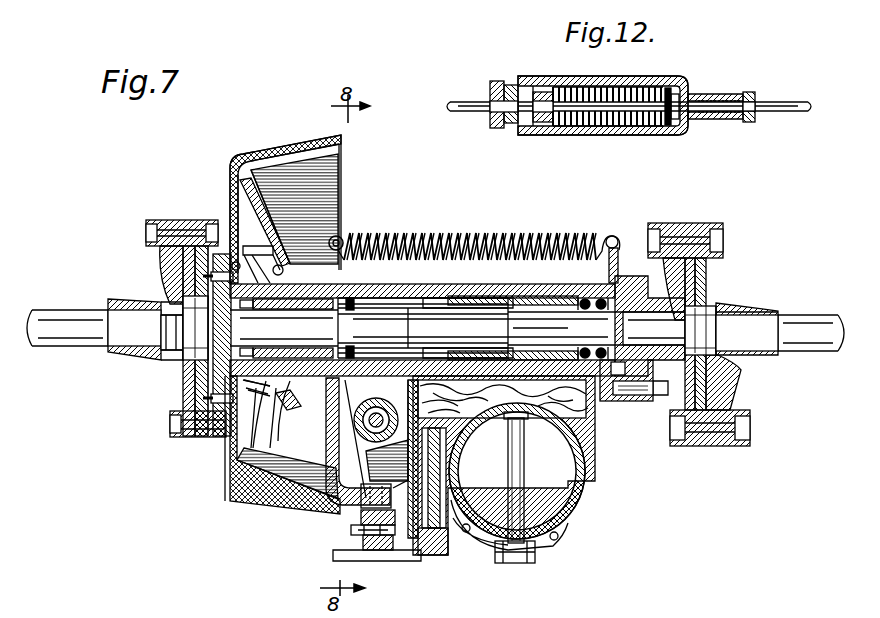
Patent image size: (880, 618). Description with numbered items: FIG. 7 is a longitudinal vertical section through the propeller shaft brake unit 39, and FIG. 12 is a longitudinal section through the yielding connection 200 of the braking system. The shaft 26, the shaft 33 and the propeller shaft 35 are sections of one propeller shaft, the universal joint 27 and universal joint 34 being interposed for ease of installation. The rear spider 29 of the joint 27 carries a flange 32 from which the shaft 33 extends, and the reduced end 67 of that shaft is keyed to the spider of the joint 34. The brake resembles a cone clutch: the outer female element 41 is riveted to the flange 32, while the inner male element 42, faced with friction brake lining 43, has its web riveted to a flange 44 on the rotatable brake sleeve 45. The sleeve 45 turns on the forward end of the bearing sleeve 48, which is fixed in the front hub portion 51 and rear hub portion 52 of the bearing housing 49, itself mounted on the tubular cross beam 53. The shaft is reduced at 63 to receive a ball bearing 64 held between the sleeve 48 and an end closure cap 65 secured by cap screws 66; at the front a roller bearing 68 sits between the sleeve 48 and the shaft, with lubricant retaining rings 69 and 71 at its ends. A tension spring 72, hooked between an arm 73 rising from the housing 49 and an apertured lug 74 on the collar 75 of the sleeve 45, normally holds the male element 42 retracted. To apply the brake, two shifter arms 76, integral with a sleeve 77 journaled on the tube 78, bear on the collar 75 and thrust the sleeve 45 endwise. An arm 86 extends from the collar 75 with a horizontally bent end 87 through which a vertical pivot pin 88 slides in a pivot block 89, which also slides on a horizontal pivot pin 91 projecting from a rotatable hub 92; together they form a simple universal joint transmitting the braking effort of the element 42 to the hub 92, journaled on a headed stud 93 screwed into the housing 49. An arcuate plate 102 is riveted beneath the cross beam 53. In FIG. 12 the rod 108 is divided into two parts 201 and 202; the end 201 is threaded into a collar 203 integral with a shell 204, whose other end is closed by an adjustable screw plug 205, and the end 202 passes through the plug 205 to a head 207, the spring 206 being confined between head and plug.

In FIG. 7, the shaft 26 is at (56, 312).
In FIG. 7, the second universal joint 27 is at (158, 212).
In FIG. 7, the spider 29 is at (195, 430).
In FIG. 7, the flange 32 is at (205, 357).
In FIG. 7, the shaft 33 is at (286, 328).
In FIG. 7, the universal joint 34 is at (685, 215).
In FIG. 7, the propeller shaft 35 is at (810, 308).
In FIG. 7, the propeller shaft brake unit 39 is at (258, 146).
In FIG. 7, the outer female element 41 is at (290, 145).
In FIG. 7, the inner male element 42 is at (336, 152).
In FIG. 7, the friction brake lining 43 is at (338, 132).
In FIG. 7, the flange 44 is at (280, 392).
In FIG. 7, the brake sleeve 45 is at (303, 262).
In FIG. 7, the bearing sleeve 48 is at (376, 283).
In FIG. 7, the bearing housing 49 is at (478, 288).
In FIG. 7, the front hub portion 51 is at (417, 290).
In FIG. 7, the rear hub portion 52 is at (575, 290).
In FIG. 7, the tubular strut or cross beam 53 is at (572, 510).
In FIG. 7, the reduced rear end of shaft 63 is at (568, 326).
In FIG. 7, the ball bearing 64 is at (651, 318).
In FIG. 7, the end closure cap 65 is at (625, 393).
In FIG. 7, the cap screws 66 is at (648, 388).
In FIG. 7, the reduced end of shaft 67 is at (700, 329).
In FIG. 7, the roller bearing 68 is at (284, 328).
In FIG. 7, the lubricant retaining ring 69 is at (213, 430).
In FIG. 7, the lubricant retaining ring 71 is at (352, 300).
In FIG. 7, the tension spring 72 is at (458, 233).
In FIG. 7, the arm 73 is at (612, 240).
In FIG. 7, the apertured lug 74 is at (334, 229).
In FIG. 7, the collar 75 is at (343, 290).
In FIG. 7, the shifter arms 76 is at (480, 328).
In FIG. 7, the sleeve 77 is at (352, 414).
In FIG. 7, the sleeve or tube 78 is at (352, 424).
In FIG. 7, the arm 86 is at (331, 445).
In FIG. 7, the horizontally bent end 87 is at (305, 508).
In FIG. 7, the vertical pivot pin 88 is at (355, 478).
In FIG. 7, the pivot block 89 is at (336, 505).
In FIG. 7, the horizontal pivot pin 91 is at (352, 547).
In FIG. 7, the rotatable hub 92 is at (447, 530).
In FIG. 7, the headed stud 93 is at (416, 548).
In FIG. 7, the arcuate plate 102 is at (527, 546).
In FIG. 12, the rod 108 is at (458, 93).
In FIG. 12, the spring housing 200 is at (541, 60).
In FIG. 12, the end of rod 201 is at (740, 114).
In FIG. 12, the end of rod 202 is at (640, 112).
In FIG. 12, the sleeve or collar 203 is at (696, 86).
In FIG. 12, the shell or housing 204 is at (600, 78).
In FIG. 12, the adjustable screw plug 205 is at (503, 120).
In FIG. 12, the spring 206 is at (575, 118).
In FIG. 12, the head 207 is at (664, 117).